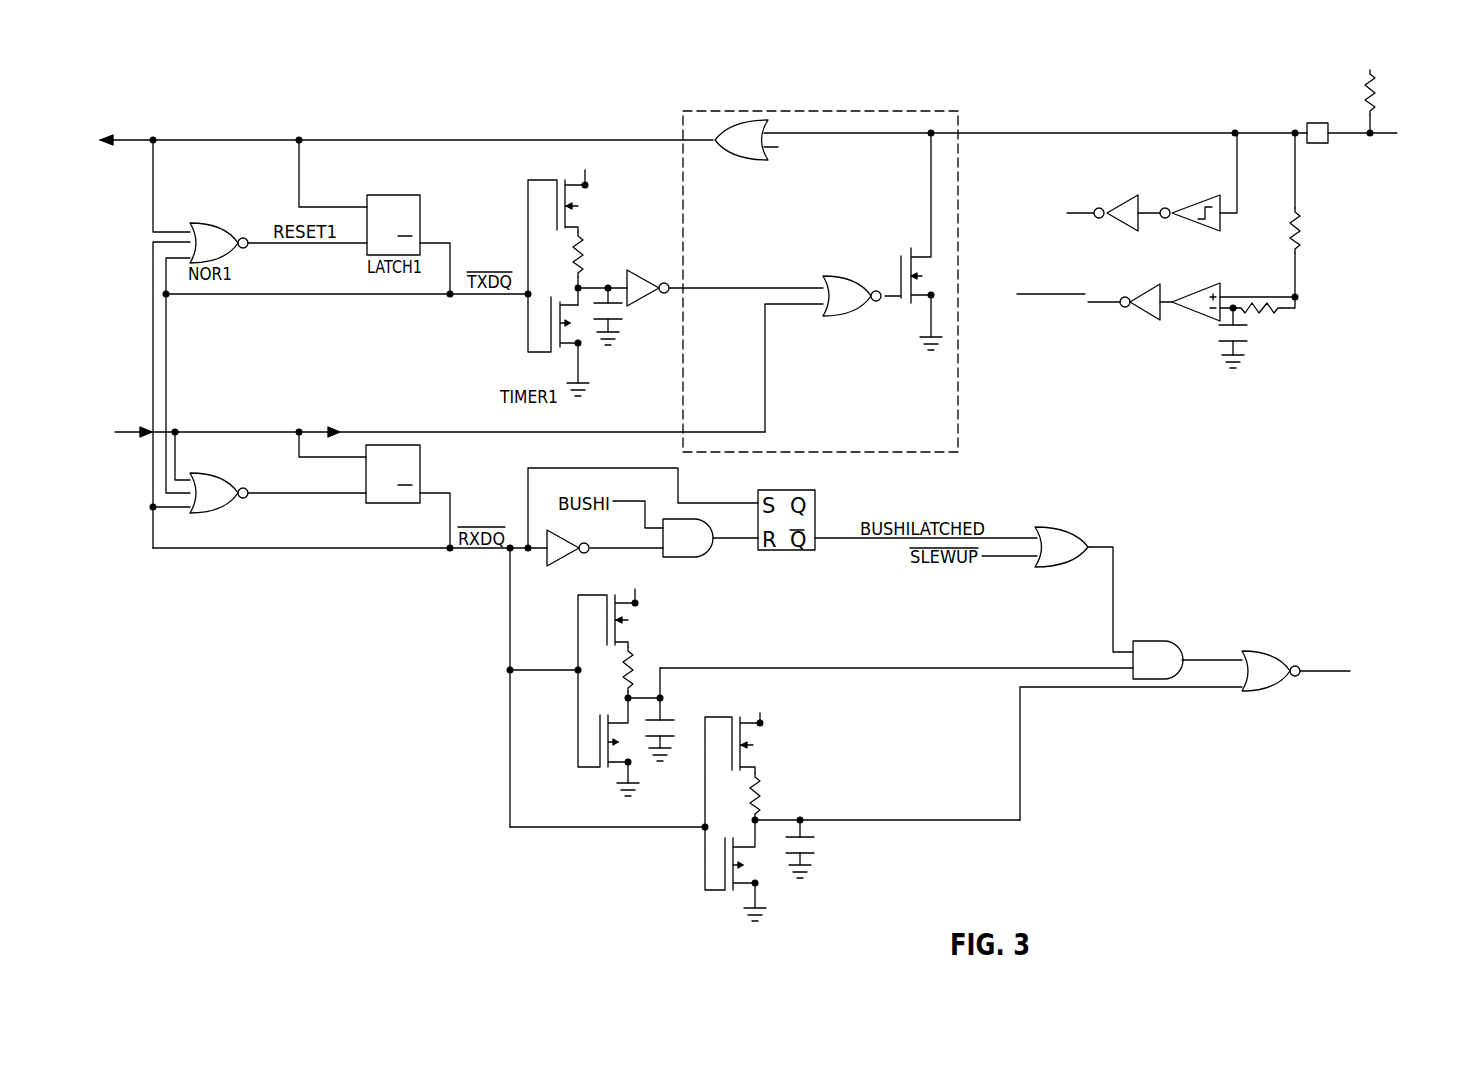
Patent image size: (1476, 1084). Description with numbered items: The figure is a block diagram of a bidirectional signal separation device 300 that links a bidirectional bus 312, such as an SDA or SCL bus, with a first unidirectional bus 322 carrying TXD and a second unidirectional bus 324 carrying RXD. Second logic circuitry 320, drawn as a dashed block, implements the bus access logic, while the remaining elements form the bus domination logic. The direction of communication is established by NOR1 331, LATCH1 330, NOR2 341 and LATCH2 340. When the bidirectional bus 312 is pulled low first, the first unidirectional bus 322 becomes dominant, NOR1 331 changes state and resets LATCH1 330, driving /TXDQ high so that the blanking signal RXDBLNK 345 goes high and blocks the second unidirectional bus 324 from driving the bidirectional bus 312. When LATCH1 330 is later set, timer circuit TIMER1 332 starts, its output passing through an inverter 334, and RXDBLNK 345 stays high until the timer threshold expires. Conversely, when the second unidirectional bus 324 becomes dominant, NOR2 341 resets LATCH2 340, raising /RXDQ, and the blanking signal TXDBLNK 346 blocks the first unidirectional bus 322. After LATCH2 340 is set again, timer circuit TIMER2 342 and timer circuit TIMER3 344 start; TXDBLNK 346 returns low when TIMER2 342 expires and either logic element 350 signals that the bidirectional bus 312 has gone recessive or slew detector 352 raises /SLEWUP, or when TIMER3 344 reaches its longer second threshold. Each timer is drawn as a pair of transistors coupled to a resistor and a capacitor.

The bidirectional signal separation device 300 is at (330, 78).
The bidirectional bus 312 is at (1384, 124).
The second logic circuitry 320 is at (802, 104).
The first unidirectional bus 322 is at (130, 132).
The second unidirectional bus 324 is at (132, 428).
The LATCH1 330 is at (390, 195).
The NOR1 331 is at (208, 222).
The timer circuit TIMER1 332 is at (576, 226).
The inverter 334 is at (667, 298).
The LATCH2 340 is at (425, 474).
The NOR2 341 is at (210, 470).
The timer circuit TIMER2 342 is at (634, 648).
The timer circuit TIMER3 344 is at (761, 796).
The blanking signal RXDBLNK 345 is at (742, 266).
The blanking signal TXDBLNK 346 is at (1310, 667).
The logic element 350 is at (1215, 200).
The slew detector 352 is at (1198, 318).